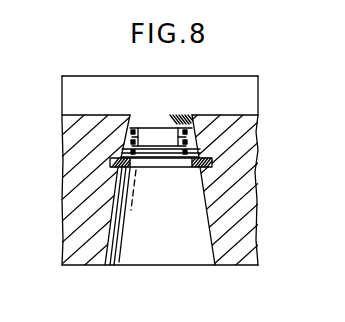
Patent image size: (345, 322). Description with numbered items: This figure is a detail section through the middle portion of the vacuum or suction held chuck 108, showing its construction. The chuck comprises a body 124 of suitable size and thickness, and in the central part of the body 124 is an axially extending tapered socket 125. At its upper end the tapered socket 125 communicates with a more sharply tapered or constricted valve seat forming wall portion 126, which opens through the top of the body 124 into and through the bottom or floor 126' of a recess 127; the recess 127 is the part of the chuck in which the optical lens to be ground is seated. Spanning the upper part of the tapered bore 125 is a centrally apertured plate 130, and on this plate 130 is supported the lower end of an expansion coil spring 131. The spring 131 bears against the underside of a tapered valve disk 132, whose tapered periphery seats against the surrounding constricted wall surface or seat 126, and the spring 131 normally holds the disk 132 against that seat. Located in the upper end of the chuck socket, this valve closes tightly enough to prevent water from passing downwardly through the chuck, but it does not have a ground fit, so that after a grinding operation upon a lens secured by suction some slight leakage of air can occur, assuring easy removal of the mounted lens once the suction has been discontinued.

The vacuum or suction held chuck 108 is at (219, 74).
The body 124 is at (238, 210).
The tapered socket 125 is at (213, 222).
The valve seat forming wall portion 126 is at (239, 129).
The bottom or floor of recess 126' is at (77, 102).
The recess 127 is at (242, 96).
The centrally apertured plate 130 is at (140, 163).
The expansion coil spring 131 is at (200, 148).
The tapered valve disk 132 is at (153, 117).